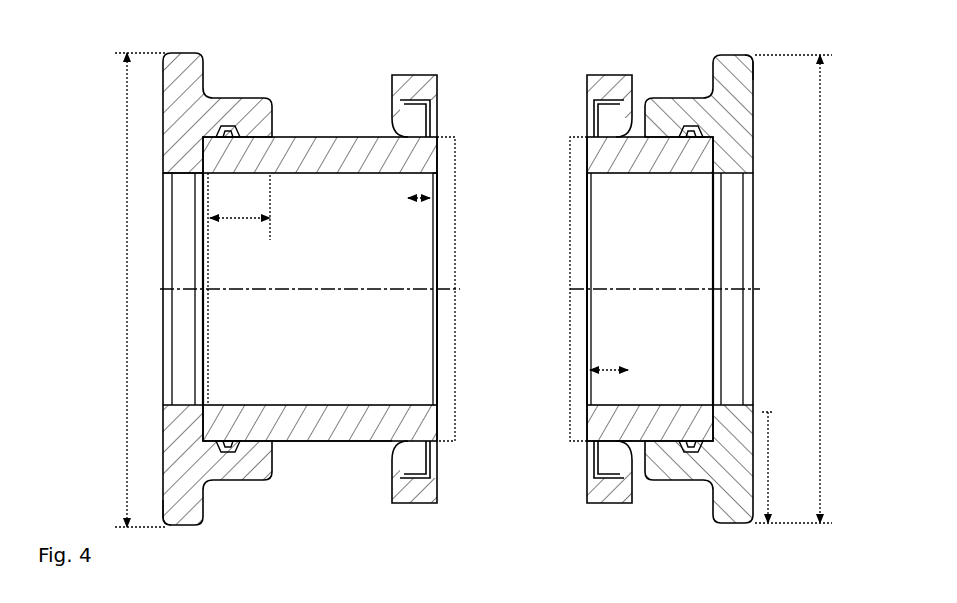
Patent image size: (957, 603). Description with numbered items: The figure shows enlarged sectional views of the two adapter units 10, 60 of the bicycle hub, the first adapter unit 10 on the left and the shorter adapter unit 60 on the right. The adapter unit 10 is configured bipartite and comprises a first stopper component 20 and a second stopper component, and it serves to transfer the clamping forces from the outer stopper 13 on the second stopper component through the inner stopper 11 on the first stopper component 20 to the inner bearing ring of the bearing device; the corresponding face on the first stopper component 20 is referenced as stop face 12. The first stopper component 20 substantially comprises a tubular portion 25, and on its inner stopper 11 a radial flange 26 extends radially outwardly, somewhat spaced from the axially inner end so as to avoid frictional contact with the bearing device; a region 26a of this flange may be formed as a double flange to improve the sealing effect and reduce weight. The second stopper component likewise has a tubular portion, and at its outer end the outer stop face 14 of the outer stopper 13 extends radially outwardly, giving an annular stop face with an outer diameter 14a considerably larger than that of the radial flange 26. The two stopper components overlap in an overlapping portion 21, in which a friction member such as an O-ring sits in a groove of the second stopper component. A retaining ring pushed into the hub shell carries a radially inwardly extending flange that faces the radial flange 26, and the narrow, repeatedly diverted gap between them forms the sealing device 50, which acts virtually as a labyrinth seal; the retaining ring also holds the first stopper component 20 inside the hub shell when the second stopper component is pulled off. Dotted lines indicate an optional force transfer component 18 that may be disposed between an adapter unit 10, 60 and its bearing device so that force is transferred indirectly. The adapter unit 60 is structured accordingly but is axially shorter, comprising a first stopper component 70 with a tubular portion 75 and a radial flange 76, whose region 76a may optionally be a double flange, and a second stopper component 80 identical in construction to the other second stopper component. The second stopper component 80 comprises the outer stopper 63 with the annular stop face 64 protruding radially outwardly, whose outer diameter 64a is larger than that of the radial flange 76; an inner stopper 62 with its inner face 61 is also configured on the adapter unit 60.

The adapter unit 10 is at (100, 88).
The inner stopper 11 is at (438, 152).
The second end of hub 12 is at (445, 432).
The outer stopper 13 is at (163, 135).
The outer stop face 14 is at (162, 442).
The outer diameter 14a is at (125, 290).
The force transfer component 18 is at (570, 279).
The first stopper component 20 is at (352, 134).
The overlapping portion 21 is at (240, 225).
The tubular portion 25 is at (332, 443).
The radial flange 26 is at (448, 100).
The region of the first flange 26a is at (414, 206).
The sealing device 50 is at (440, 170).
The adapter unit 60 is at (782, 40).
The first end of second hub 61 is at (585, 162).
The inner stopper 62 is at (578, 440).
The outer stopper 63 is at (770, 168).
The stop face 64 is at (772, 440).
The outer diameter 64a is at (822, 283).
The first stopper component 70 is at (640, 175).
The second hub outer surface 75 is at (683, 403).
The radial flange 76 is at (600, 458).
The second hub end wall thickness 76a is at (610, 360).
The second stopper component 80 is at (740, 55).